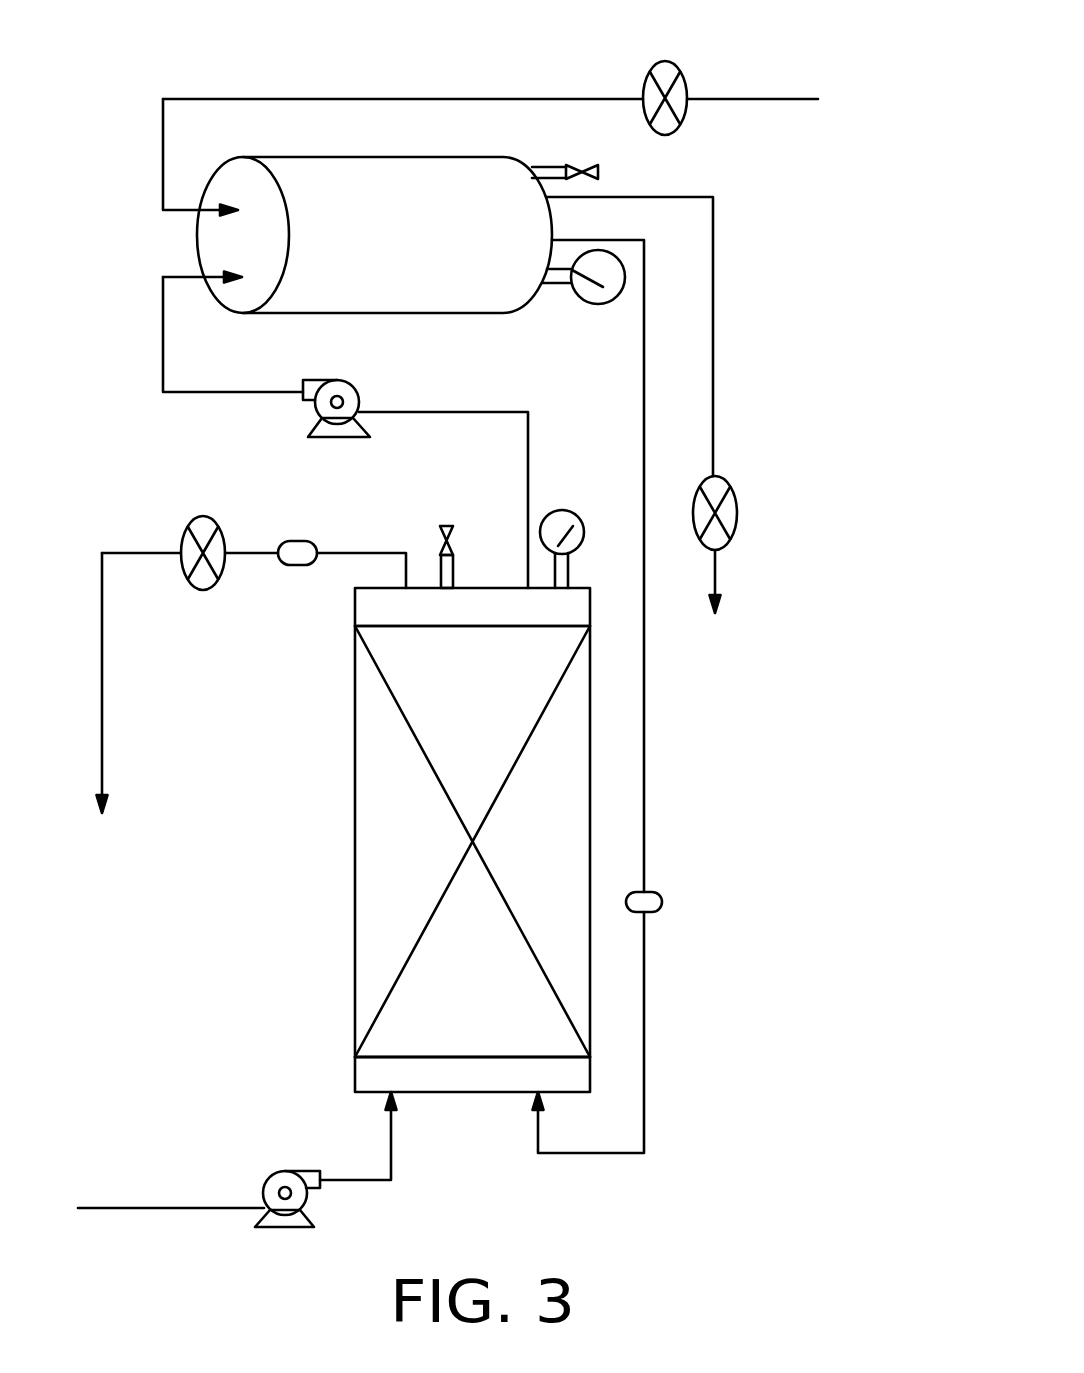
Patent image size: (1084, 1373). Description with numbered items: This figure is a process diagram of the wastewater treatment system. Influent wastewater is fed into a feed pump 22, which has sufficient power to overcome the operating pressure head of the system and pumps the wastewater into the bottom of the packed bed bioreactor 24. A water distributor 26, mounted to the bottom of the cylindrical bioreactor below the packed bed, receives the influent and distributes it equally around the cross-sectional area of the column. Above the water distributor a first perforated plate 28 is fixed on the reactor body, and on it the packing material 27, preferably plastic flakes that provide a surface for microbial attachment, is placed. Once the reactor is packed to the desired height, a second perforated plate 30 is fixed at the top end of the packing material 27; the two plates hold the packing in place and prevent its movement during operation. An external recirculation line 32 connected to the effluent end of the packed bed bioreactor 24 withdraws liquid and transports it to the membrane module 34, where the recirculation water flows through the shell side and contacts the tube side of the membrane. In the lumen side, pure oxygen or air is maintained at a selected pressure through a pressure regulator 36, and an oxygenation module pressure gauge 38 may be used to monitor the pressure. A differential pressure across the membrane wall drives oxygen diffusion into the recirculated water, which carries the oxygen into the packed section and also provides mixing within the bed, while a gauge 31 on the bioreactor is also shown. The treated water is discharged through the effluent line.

The feed pump 22 is at (310, 1207).
The packed bed bioreactor 24 is at (500, 855).
The water distributor 26 is at (590, 1092).
The packing material 27 is at (540, 862).
The first perforated plate 28 is at (590, 1057).
The second perforated plate 30 is at (590, 626).
The pressure gauge 31 is at (567, 500).
The external recirculation line 32 is at (650, 715).
The membrane module 34 is at (360, 148).
The pressure regulator 36 is at (678, 65).
The oxygenation module pressure gauge 38 is at (573, 296).